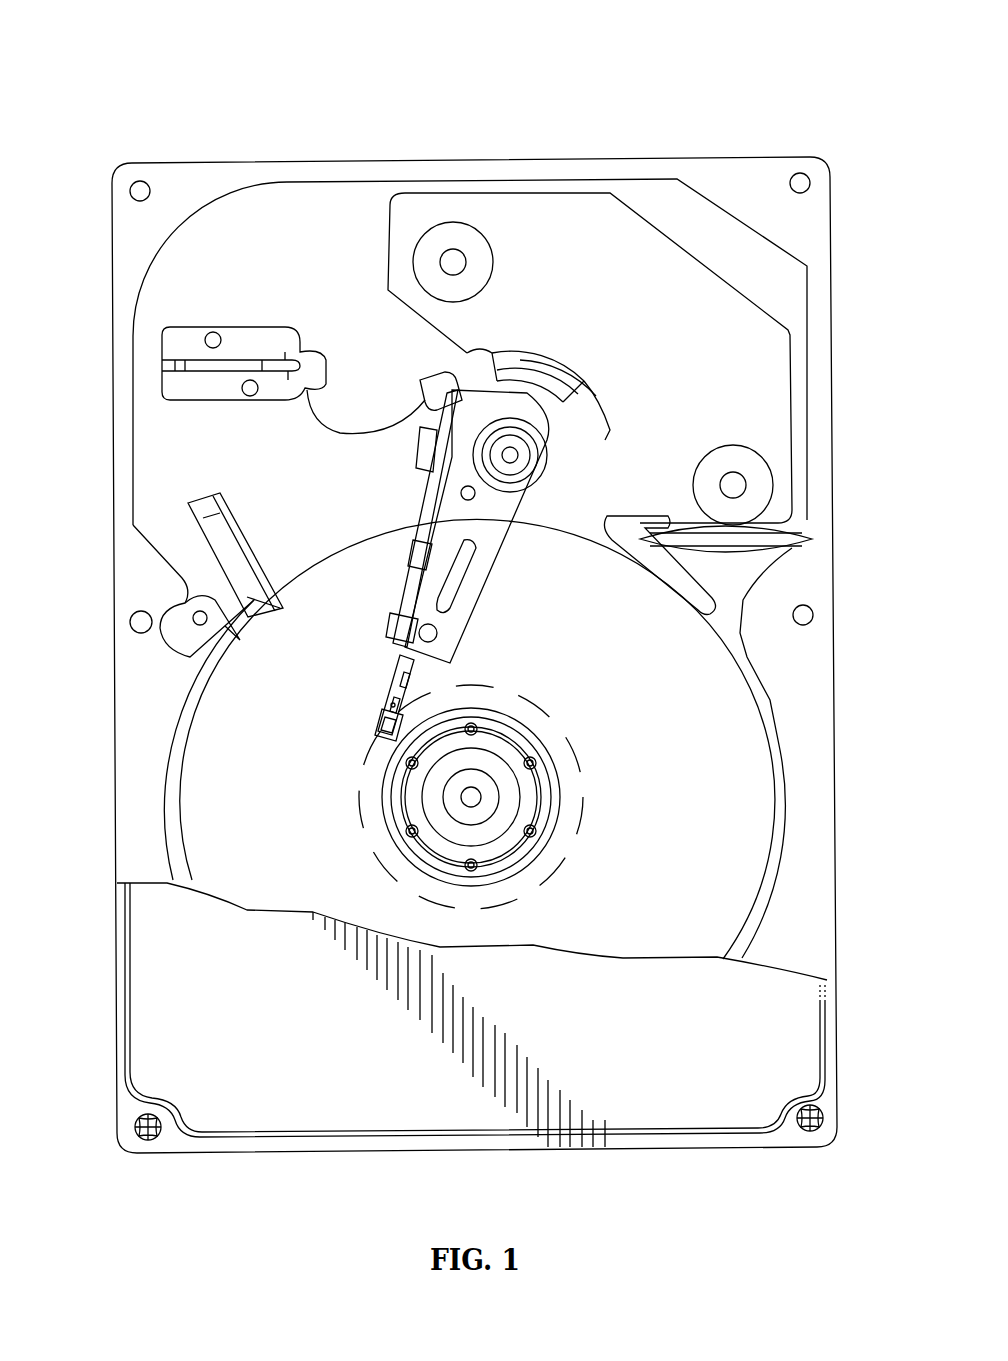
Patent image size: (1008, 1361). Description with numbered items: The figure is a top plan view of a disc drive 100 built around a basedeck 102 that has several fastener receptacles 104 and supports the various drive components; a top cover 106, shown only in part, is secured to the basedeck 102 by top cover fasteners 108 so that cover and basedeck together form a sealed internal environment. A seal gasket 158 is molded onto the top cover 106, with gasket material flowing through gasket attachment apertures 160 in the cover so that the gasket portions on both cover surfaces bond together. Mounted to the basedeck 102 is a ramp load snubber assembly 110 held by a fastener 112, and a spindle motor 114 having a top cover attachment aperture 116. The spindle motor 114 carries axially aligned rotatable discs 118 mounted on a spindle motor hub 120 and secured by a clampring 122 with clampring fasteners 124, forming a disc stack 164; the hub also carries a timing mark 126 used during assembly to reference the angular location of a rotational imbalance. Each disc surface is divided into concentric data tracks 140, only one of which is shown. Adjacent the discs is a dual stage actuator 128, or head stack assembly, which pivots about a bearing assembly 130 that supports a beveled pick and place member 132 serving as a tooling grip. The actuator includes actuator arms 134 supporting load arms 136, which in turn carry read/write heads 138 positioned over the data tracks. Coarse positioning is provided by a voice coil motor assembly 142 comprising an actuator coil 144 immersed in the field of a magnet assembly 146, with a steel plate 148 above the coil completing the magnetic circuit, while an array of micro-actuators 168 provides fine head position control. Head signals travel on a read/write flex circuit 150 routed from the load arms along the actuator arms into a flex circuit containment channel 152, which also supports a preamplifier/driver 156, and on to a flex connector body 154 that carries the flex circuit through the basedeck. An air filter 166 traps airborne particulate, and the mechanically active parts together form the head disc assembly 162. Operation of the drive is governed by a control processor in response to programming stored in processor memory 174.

The disc drive 100 is at (425, 75).
The basedeck 102 is at (295, 240).
The fastener receptacles 104 is at (133, 182).
The top cover 106 is at (172, 968).
The top cover fasteners 108 is at (140, 1134).
The ramp load snubber assembly 110 is at (220, 540).
The fastener 112 is at (190, 607).
The spindle motor 114 is at (500, 768).
The top cover attachment aperture 116 is at (478, 792).
The discs 118 is at (695, 690).
The spindle motor hub 120 is at (505, 806).
The clampring 122 is at (388, 832).
The clampring fasteners 124 is at (410, 836).
The timing mark 126 is at (420, 814).
The dual stage actuator 128 is at (520, 537).
The bearing assembly 130 is at (548, 465).
The beveled pick and place member 132 is at (490, 462).
The actuator arms 134 is at (437, 617).
The load arms 136 is at (405, 680).
The read/write heads 138 is at (385, 722).
The data tracks 140 is at (572, 852).
The voice coil motor assembly 142 is at (760, 284).
The actuator coil 144 is at (467, 360).
The magnet assembly 146 is at (565, 246).
The steel plate 148 is at (773, 388).
The read/write flex circuit 150 is at (307, 420).
The flex circuit containment channel 152 is at (416, 546).
The flex connector body 154 is at (182, 388).
The preamplifier/driver 156 is at (423, 447).
The seal gasket 158 is at (833, 1028).
The gasket attachment apertures 160 is at (830, 988).
The head disc assembly 162 is at (430, 1148).
The disc stack 164 is at (773, 736).
The air filter 166 is at (763, 537).
The micro-actuator 168 is at (387, 657).
The processor memory 174 is at (555, 406).